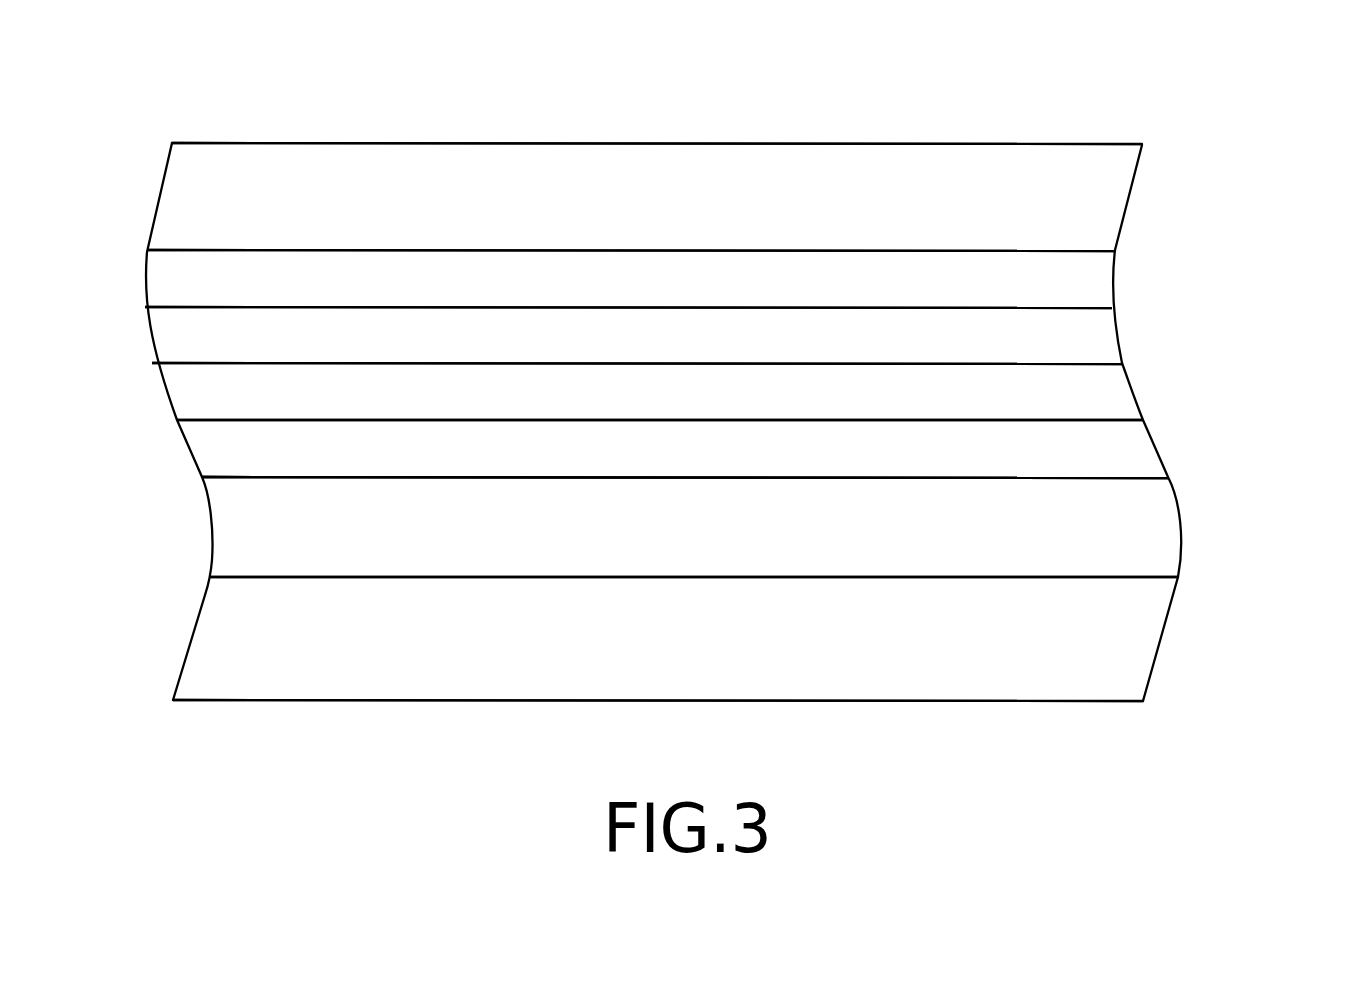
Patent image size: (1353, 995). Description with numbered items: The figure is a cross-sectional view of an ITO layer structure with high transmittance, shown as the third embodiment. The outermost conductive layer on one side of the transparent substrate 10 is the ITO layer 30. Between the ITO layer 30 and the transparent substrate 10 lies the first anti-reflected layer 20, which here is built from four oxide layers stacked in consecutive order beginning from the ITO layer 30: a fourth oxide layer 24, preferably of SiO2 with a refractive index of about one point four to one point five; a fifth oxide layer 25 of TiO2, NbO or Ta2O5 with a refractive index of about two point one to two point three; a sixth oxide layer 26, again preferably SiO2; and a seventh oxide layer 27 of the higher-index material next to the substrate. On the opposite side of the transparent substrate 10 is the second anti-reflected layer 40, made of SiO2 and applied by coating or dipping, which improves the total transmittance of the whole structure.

The ITO layer 30 is at (970, 192).
The first anti-reflected layer 20 is at (140, 253).
The fourth oxide layer 24 is at (1025, 258).
The fifth oxide layer 25 is at (1035, 330).
The sixth oxide layer 26 is at (1070, 390).
The seventh oxide layer 27 is at (1112, 452).
The transparent substrate 10 is at (1118, 537).
The second anti-reflected layer 40 is at (1128, 640).